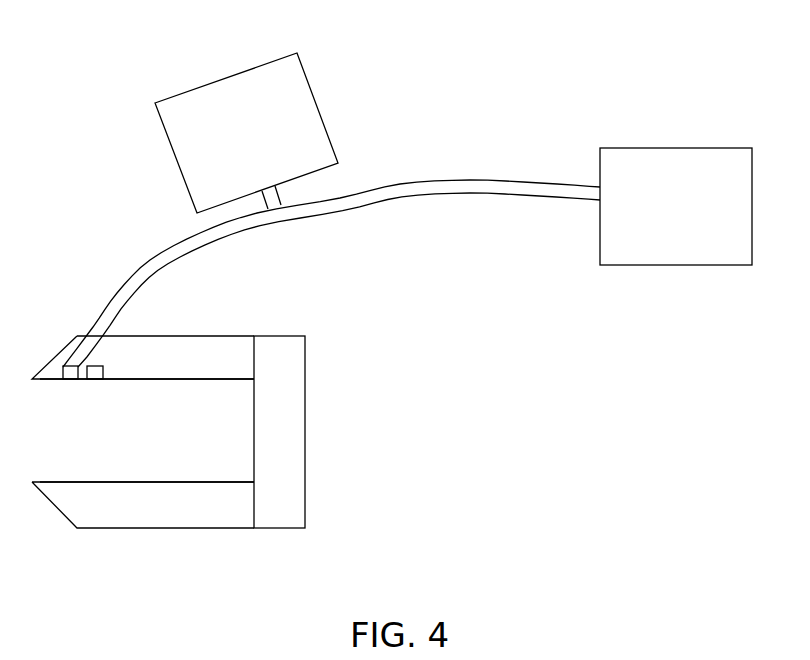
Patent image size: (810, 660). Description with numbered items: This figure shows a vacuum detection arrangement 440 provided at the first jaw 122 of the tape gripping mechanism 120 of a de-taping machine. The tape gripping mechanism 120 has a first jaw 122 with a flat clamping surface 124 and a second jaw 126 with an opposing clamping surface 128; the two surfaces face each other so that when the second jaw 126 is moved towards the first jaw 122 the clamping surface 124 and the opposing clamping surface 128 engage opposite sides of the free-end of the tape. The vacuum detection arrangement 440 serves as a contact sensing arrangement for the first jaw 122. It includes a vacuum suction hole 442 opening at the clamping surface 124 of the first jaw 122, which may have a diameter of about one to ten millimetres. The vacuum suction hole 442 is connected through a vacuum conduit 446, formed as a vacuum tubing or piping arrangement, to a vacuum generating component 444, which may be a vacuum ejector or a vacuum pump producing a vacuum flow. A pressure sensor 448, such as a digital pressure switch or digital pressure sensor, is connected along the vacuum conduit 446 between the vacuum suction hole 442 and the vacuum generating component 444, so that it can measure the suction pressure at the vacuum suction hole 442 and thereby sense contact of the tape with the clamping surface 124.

The tape gripping mechanism 120 is at (292, 333).
The first jaw 122 is at (203, 345).
The clamping surface 124 is at (208, 383).
The second jaw 126 is at (157, 515).
The opposing clamping surface 128 is at (158, 480).
The vacuum detection arrangement 440 is at (407, 190).
The vacuum suction hole 442 is at (71, 377).
The vacuum generating component 444 is at (672, 160).
The vacuum conduit 446 is at (482, 187).
The pressure sensor 448 is at (312, 118).